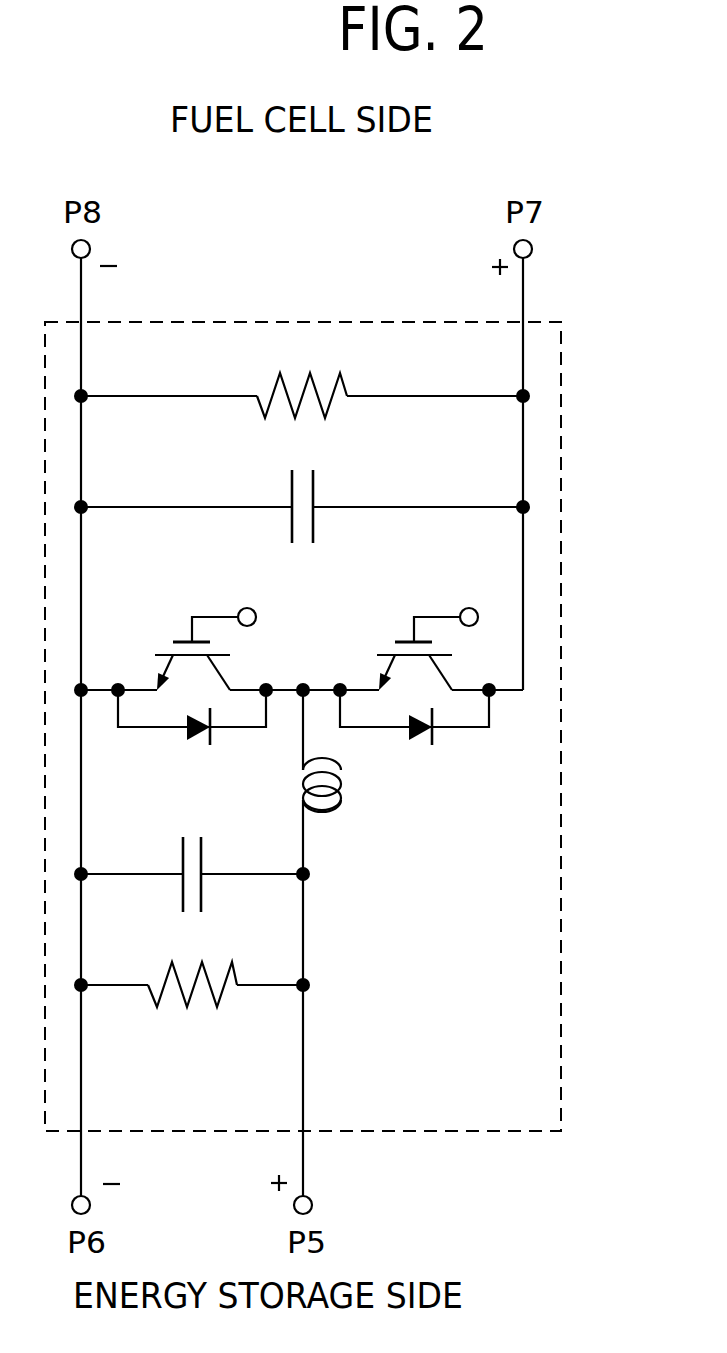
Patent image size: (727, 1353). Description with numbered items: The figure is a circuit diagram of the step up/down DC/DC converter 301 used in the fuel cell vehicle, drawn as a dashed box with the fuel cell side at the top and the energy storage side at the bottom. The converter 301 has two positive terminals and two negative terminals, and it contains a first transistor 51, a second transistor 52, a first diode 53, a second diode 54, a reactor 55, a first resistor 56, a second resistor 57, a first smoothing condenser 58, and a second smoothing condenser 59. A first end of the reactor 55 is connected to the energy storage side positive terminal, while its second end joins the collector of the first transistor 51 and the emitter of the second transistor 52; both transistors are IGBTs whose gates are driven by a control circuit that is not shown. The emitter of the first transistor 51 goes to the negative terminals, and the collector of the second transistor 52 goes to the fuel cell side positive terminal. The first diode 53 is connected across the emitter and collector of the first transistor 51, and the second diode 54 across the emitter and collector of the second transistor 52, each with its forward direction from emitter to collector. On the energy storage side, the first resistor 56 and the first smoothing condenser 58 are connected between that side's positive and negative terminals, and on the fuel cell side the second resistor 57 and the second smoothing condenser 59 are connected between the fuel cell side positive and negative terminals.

The step up/down DC/DC converter 301 is at (242, 288).
The first transistor 51 is at (177, 628).
The second transistor 52 is at (382, 628).
The first diode 53 is at (193, 745).
The second diode 54 is at (428, 745).
The reactor 55 is at (338, 820).
The first resistor 56 is at (193, 1025).
The second resistor 57 is at (348, 372).
The first smoothing condenser 58 is at (215, 892).
The second smoothing condenser 59 is at (350, 473).